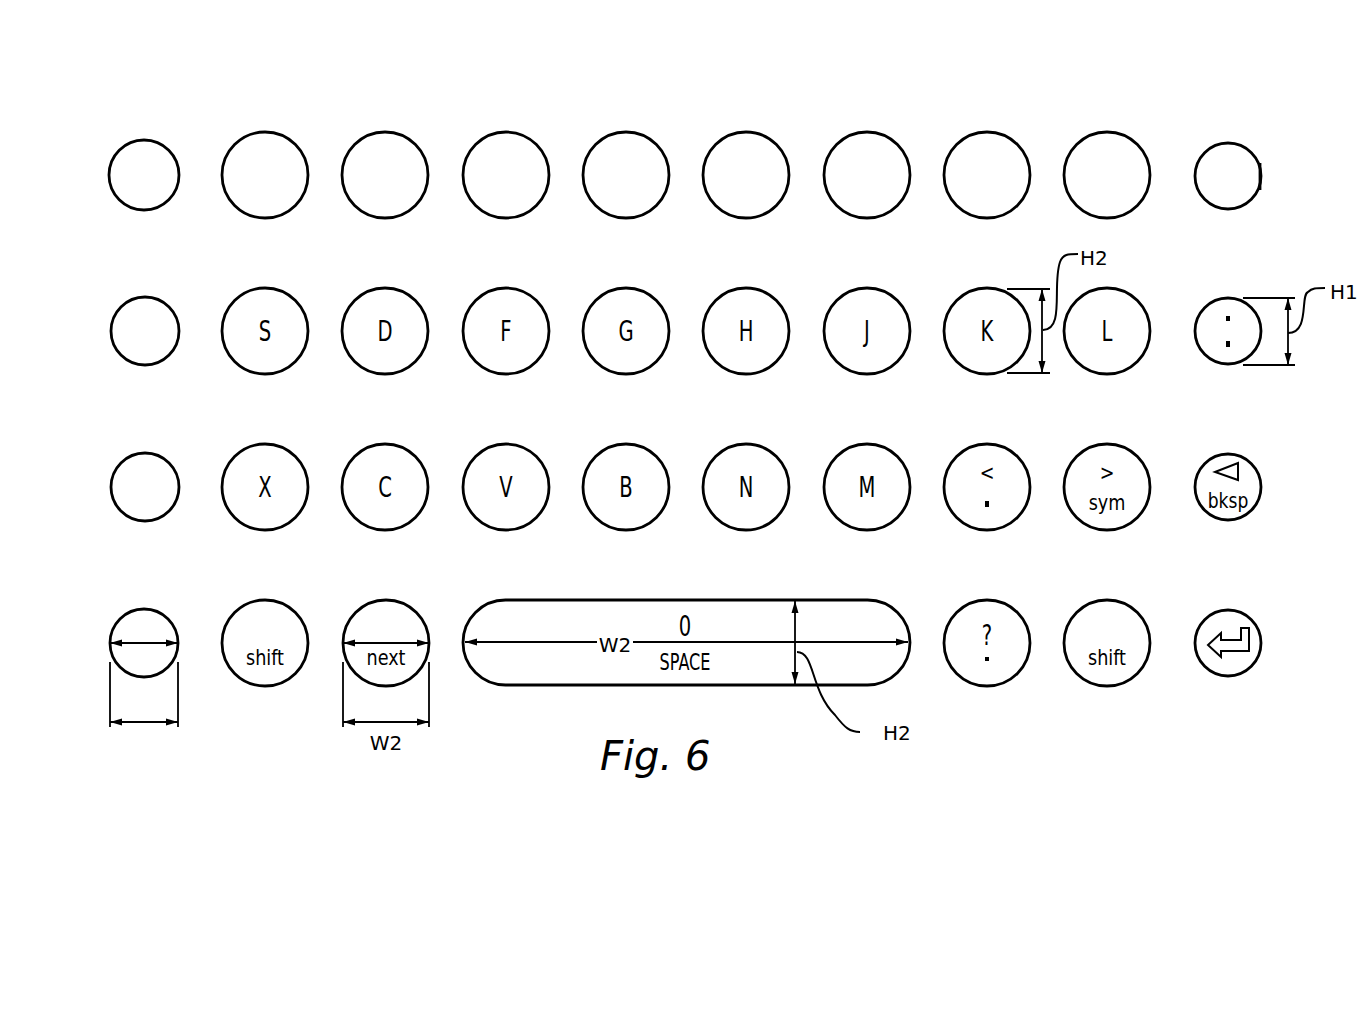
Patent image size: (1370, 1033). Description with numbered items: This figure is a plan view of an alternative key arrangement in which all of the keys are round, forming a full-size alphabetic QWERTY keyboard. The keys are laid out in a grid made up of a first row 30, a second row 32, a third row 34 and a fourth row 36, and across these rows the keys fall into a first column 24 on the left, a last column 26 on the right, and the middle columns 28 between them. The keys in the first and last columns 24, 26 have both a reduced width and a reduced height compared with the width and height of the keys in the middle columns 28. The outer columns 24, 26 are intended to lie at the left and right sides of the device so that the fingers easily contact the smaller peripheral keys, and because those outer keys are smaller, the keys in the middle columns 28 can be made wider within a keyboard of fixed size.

The first column 24 is at (143, 140).
The last column 26 is at (1205, 142).
The middle columns 28 is at (257, 132).
The first row 30 is at (100, 136).
The second row 32 is at (111, 331).
The third row 34 is at (111, 487).
The fourth row 36 is at (112, 632).